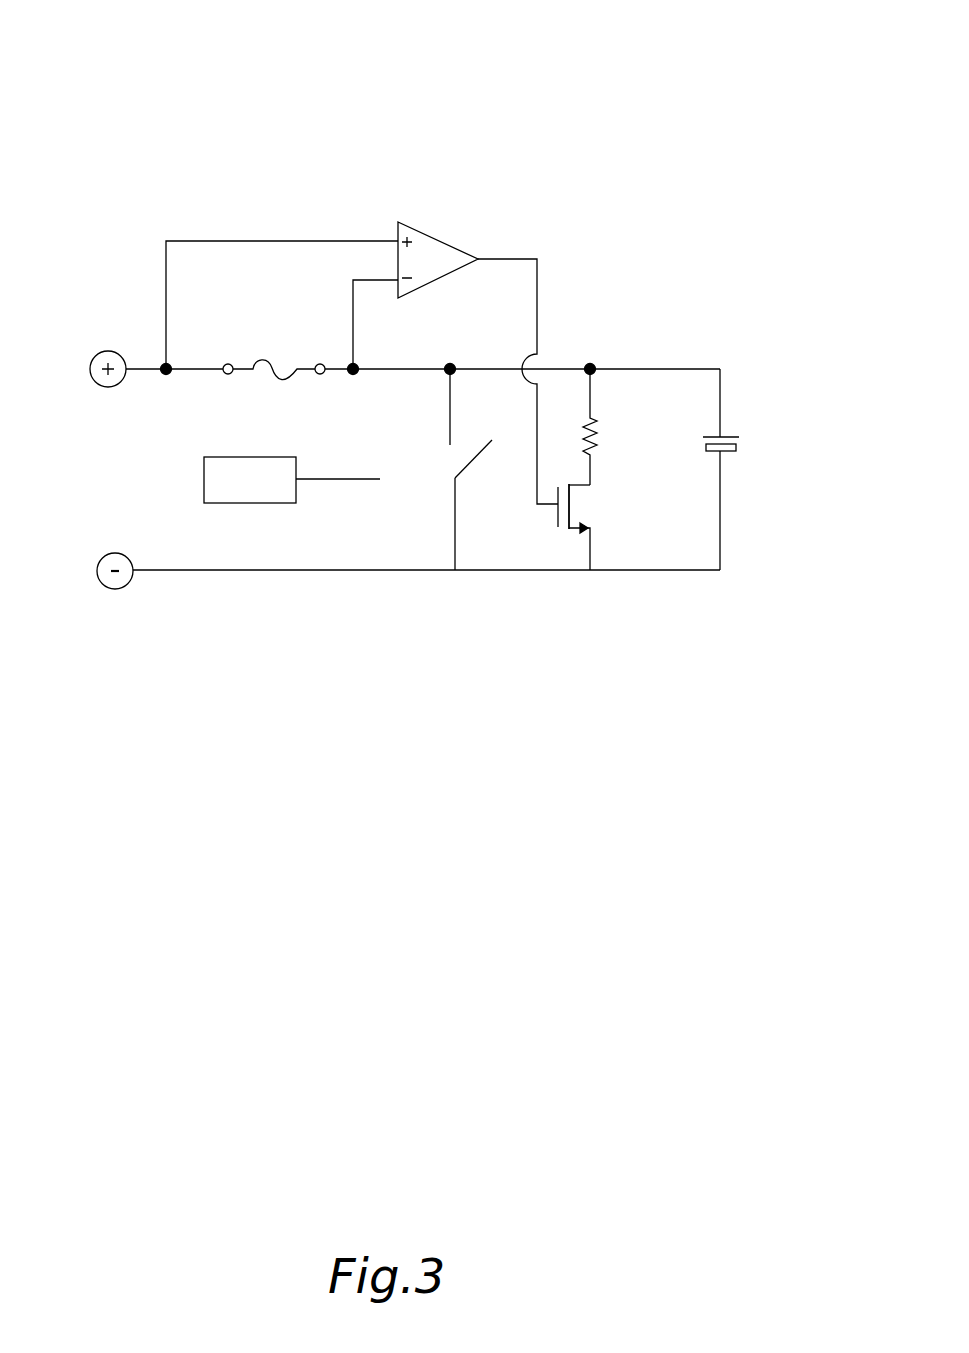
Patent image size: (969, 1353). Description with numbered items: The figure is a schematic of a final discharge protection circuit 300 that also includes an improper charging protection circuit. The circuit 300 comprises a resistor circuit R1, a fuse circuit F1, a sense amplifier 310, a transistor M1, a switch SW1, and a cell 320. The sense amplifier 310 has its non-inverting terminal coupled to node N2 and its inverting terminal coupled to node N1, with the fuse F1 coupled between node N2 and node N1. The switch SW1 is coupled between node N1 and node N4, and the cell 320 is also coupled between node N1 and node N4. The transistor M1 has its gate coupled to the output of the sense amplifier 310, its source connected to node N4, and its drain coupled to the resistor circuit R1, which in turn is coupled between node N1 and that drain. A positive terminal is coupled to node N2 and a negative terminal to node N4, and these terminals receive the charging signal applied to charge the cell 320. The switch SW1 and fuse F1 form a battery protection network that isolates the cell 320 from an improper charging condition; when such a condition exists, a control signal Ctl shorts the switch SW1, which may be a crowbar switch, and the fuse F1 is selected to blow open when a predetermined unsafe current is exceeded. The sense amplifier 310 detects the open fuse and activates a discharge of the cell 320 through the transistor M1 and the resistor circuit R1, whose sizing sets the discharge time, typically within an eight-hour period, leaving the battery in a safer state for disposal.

The final discharge protection circuit 300 is at (623, 43).
The sense amplifier 310 is at (420, 224).
The cell 320 is at (735, 420).
The node N1 is at (402, 370).
The node N2 is at (166, 317).
The node N4 is at (313, 570).
The fuse circuit F1 is at (274, 389).
The resistor circuit R1 is at (614, 427).
The transistor M1 is at (586, 521).
The switch SW1 is at (442, 469).
The control signal Ctl is at (292, 480).